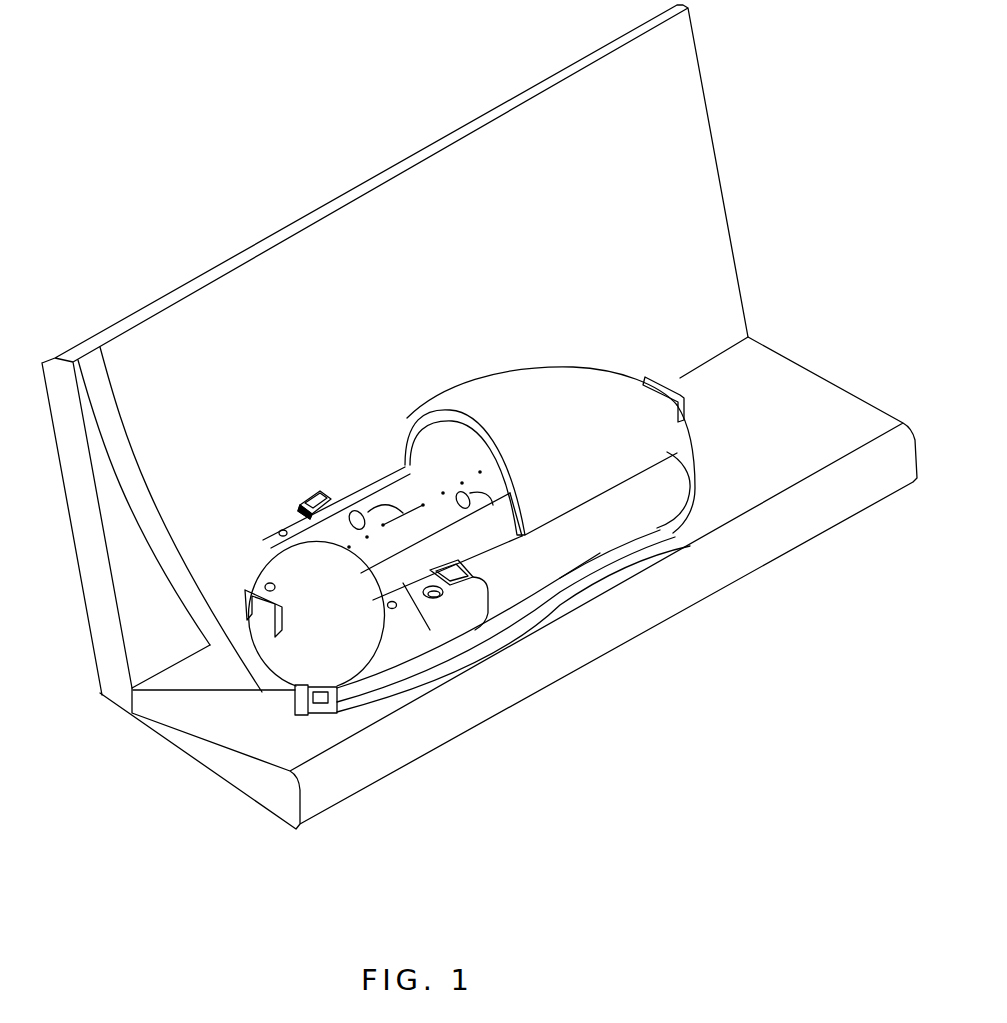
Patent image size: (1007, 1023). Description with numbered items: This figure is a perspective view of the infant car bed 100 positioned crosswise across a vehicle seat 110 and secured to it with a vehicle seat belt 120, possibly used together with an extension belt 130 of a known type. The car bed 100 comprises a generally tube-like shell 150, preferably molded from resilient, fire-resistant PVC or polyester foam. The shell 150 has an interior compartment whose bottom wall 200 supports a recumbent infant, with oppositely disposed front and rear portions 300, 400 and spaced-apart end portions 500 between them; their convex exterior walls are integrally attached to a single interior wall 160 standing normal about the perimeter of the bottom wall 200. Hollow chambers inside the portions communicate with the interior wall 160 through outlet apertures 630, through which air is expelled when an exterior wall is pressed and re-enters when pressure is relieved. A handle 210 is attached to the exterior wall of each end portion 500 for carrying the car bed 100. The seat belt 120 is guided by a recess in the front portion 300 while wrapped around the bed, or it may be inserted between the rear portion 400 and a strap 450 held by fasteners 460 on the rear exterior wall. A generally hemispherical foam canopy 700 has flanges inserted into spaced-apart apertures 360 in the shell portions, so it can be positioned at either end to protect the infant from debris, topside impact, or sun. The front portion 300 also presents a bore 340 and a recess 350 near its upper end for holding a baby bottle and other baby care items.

The infant car bed 100 is at (356, 370).
The vehicle seat 110 is at (768, 355).
The vehicle seat belt 120 is at (117, 438).
The extension belt 130 is at (590, 572).
The shell 150 is at (540, 549).
The interior wall 160 is at (397, 497).
The bottom wall 200 is at (454, 507).
The handle 210 is at (655, 378).
The front portion 300 is at (672, 470).
The bore 340 is at (436, 599).
The recess 350 is at (457, 582).
The apertures 360 is at (276, 590).
The rear portion 400 is at (233, 573).
The strap 450 is at (312, 497).
The fastener 460 is at (321, 500).
The end portions 500 is at (280, 563).
The outlet aperture 630 is at (356, 530).
The canopy 700 is at (527, 397).